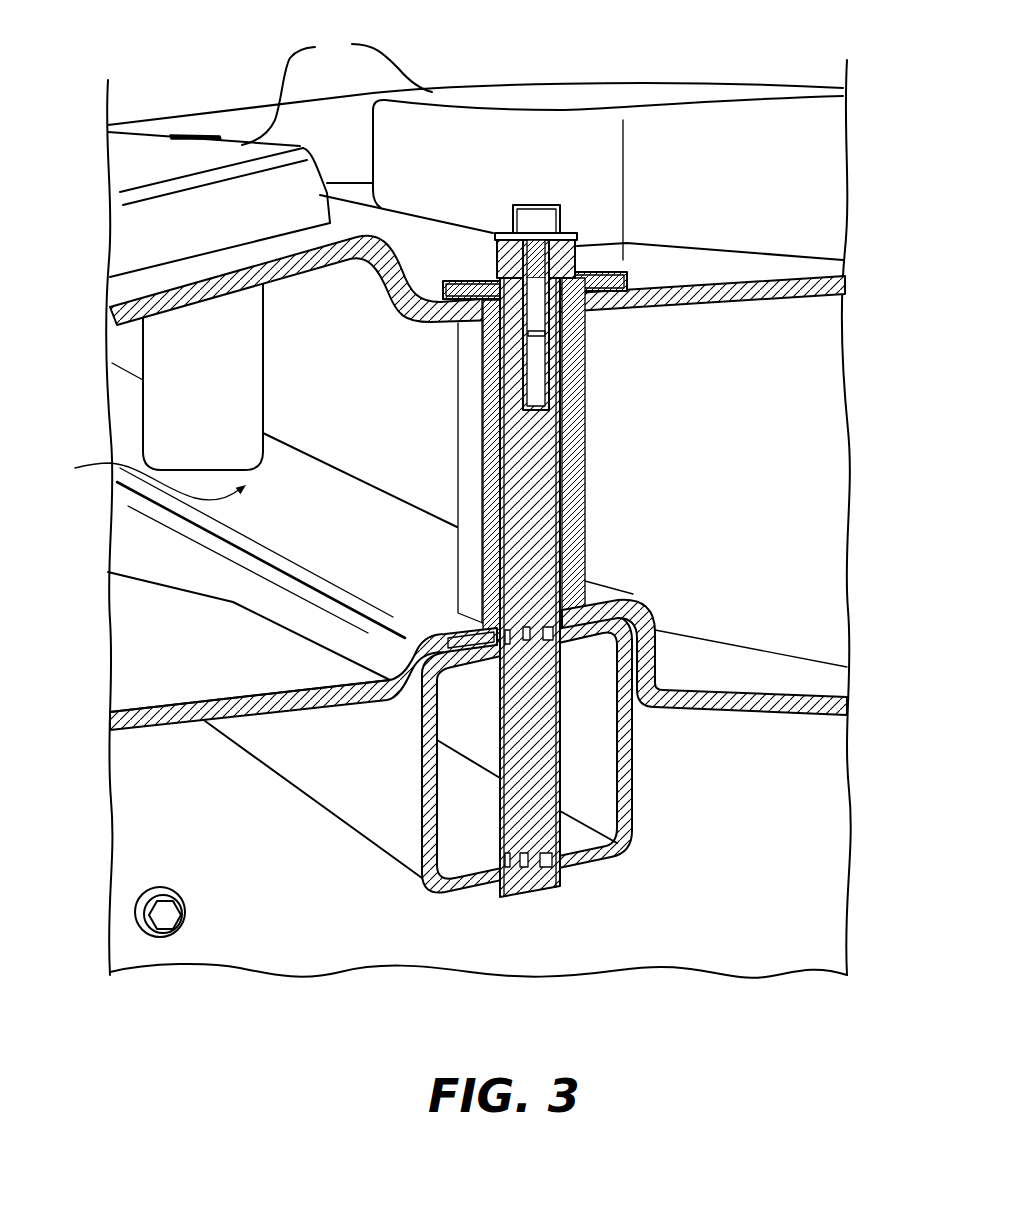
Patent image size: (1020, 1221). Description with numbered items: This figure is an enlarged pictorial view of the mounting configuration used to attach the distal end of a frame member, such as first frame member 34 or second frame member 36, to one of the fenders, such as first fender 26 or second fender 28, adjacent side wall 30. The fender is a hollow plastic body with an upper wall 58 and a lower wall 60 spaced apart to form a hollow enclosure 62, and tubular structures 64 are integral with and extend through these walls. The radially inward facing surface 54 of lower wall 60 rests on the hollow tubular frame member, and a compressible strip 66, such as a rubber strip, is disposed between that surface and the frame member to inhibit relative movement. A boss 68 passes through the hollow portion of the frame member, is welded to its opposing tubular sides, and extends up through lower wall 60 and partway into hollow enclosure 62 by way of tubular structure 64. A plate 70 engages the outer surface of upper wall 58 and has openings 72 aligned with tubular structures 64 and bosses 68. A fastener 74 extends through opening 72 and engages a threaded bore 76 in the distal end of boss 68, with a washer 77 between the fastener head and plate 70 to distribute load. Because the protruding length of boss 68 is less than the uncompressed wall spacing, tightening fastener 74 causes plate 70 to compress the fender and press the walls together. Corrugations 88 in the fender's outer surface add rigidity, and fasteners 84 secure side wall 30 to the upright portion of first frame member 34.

The first fender 26 is at (581, 132).
The second fender 28 is at (724, 57).
The side wall 30 is at (787, 941).
The first frame member 34 is at (418, 758).
The second frame member 36 is at (387, 836).
The radially inward facing surface 54 is at (303, 691).
The upper wall 58 is at (207, 288).
The lower wall 60 is at (170, 710).
The hollow enclosure 62 is at (144, 477).
The tubular structures 64 is at (214, 385).
The compressible strip 66 is at (633, 594).
The boss 68 is at (545, 523).
The plate 70 is at (603, 283).
The openings 72 is at (497, 270).
The fastener 74 is at (201, 133).
The threaded bore 76 is at (528, 378).
The washer 77 is at (627, 247).
The fasteners 84 is at (181, 898).
The corrugations 88 is at (337, 88).